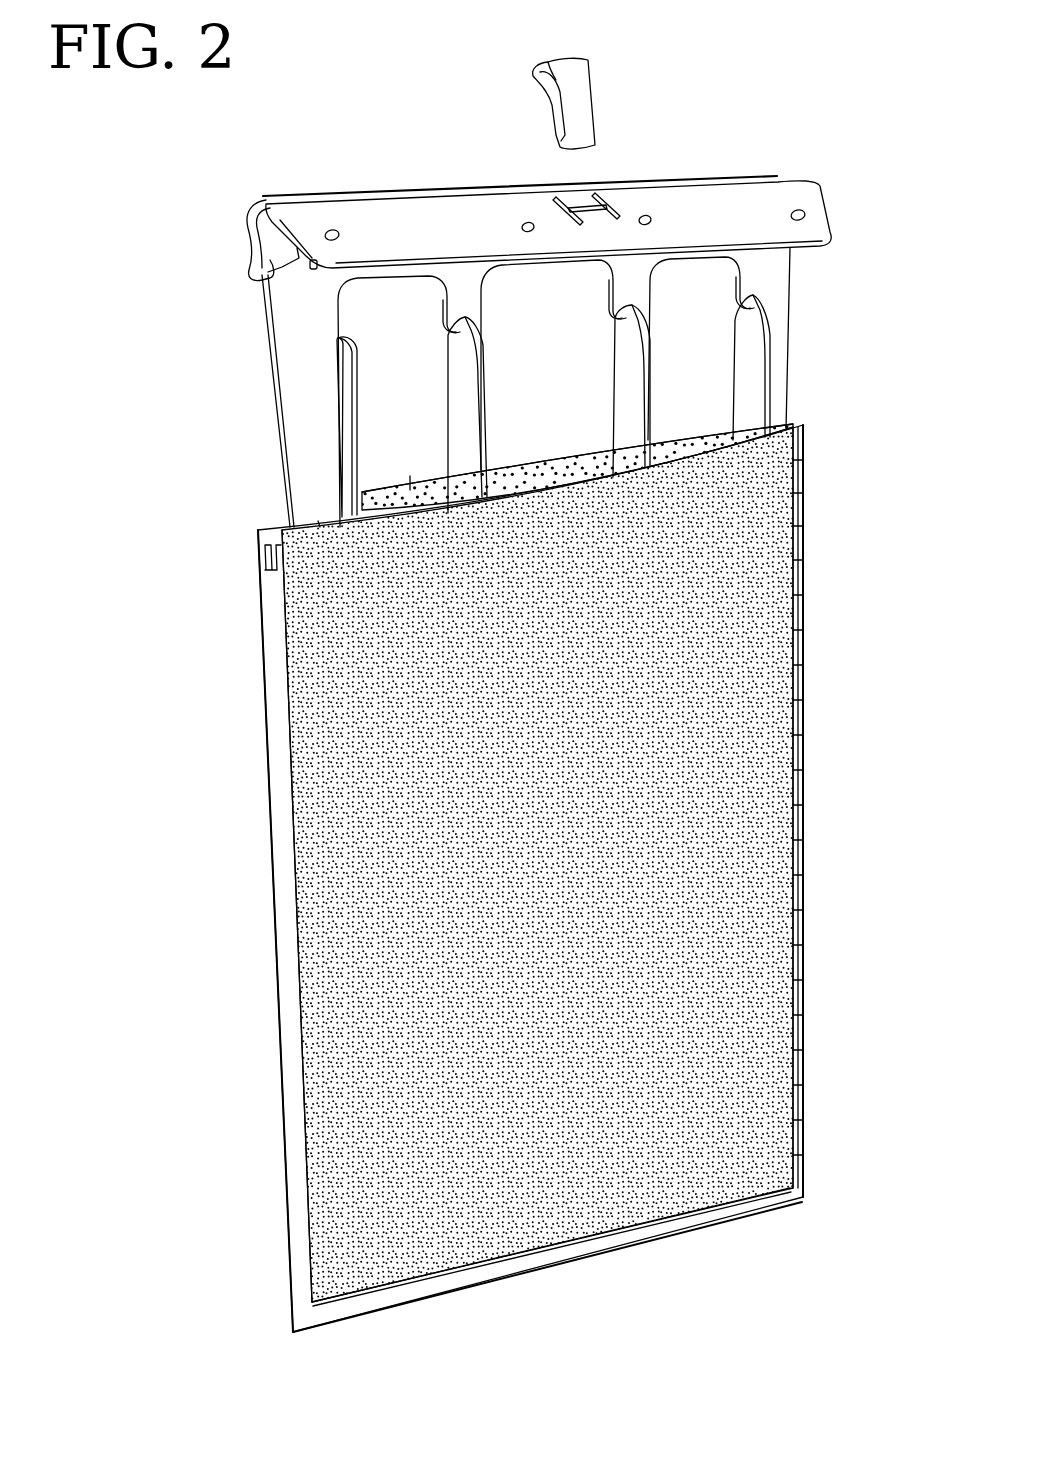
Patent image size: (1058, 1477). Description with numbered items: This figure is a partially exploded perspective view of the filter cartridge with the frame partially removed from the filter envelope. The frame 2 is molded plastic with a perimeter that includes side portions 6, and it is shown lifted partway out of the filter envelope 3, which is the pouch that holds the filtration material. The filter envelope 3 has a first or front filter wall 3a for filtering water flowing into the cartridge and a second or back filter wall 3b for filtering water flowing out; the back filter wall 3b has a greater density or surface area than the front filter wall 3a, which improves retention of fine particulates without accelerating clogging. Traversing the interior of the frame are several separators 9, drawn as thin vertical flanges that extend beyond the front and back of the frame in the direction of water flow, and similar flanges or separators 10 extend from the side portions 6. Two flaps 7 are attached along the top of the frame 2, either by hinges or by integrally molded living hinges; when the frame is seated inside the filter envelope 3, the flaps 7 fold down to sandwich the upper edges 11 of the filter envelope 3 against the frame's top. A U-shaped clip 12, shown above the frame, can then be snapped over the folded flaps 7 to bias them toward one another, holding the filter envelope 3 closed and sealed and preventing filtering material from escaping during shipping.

The frame 2 is at (788, 192).
The filter envelope 3 is at (806, 588).
The first or front filter wall 3a is at (550, 472).
The second or back filter wall 3b is at (600, 1148).
The side portions 6 is at (295, 350).
The flaps 7 is at (346, 216).
The separators 9 is at (628, 357).
The flanges or separators 10 is at (346, 410).
The upper edges 11 is at (410, 476).
The clip 12 is at (580, 70).